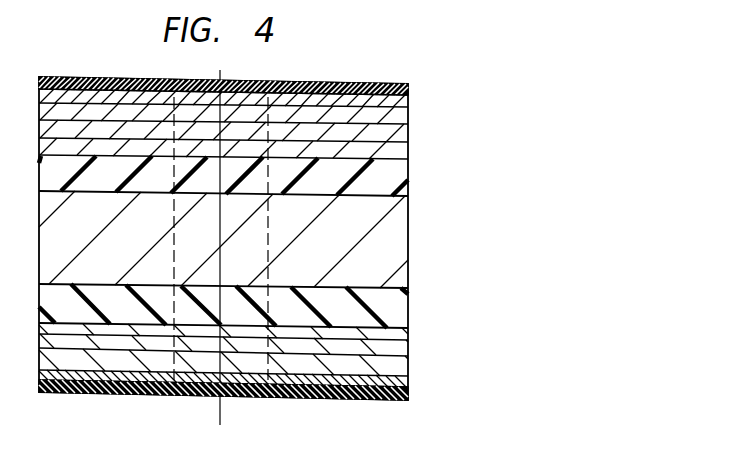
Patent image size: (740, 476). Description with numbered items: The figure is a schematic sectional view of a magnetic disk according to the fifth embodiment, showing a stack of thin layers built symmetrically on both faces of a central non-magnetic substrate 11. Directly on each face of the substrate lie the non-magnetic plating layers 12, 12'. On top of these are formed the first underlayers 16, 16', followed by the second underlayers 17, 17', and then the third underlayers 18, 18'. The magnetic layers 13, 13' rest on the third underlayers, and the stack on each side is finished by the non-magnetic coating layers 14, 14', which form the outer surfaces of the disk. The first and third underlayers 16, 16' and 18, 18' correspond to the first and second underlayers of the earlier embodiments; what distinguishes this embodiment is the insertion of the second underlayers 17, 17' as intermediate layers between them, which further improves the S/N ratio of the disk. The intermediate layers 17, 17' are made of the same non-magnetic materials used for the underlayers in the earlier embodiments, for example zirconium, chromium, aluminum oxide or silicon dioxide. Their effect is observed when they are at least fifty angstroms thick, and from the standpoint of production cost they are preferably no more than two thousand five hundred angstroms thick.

The non-magnetic substrate 11 is at (402, 223).
The non-magnetic plating layer 12 is at (253, 179).
The non-magnetic plating layer 12' is at (256, 306).
The magnetic layer 13 is at (253, 101).
The magnetic layer 13' is at (256, 398).
The non-magnetic coating layer 14 is at (253, 76).
The non-magnetic coating layer 14' is at (256, 415).
The first underlayer 16 is at (253, 160).
The first underlayer 16' is at (256, 336).
The second underlayer 17 is at (253, 137).
The second underlayer 17' is at (256, 354).
The third underlayer 18 is at (253, 119).
The third underlayer 18' is at (256, 375).